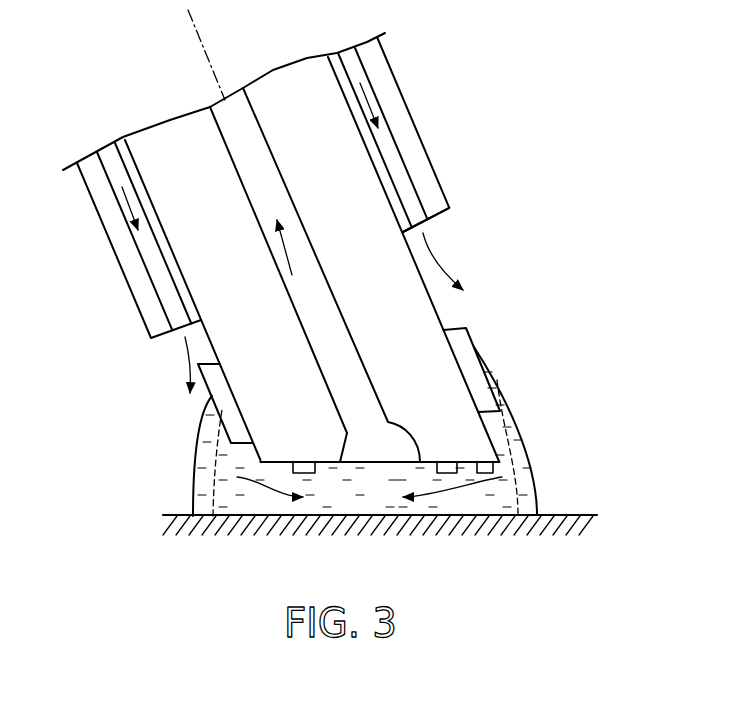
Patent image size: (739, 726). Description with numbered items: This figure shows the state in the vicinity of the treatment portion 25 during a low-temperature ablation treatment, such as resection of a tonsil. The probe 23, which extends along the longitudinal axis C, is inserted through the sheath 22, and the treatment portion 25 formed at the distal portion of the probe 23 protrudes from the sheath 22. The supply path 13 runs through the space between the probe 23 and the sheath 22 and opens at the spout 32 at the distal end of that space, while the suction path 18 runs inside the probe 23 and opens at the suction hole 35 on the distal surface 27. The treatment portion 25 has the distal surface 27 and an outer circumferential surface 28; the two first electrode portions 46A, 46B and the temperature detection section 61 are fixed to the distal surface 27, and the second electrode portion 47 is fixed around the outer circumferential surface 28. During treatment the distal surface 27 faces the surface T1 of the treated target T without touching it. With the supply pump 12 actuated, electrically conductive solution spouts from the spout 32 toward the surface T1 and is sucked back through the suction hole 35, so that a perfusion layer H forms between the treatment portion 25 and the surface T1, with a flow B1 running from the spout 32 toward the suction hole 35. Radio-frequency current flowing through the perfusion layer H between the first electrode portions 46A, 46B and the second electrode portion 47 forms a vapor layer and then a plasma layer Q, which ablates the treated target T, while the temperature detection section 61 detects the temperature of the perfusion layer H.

The longitudinal axis C is at (203, 53).
The probe 23 is at (290, 103).
The sheath 22 is at (422, 122).
The supply path 13 is at (397, 167).
The spout 32 is at (423, 232).
The outer circumferential surface 28 is at (405, 277).
The treatment portion 25 is at (410, 325).
The suction path 18 is at (318, 295).
The second electrode portion 47 is at (465, 343).
The supply pump 12 is at (139, 240).
The perfusion layer H is at (205, 440).
The plasma layer Q is at (523, 460).
The first electrode portion 46A is at (443, 462).
The first electrode portion 46B is at (307, 462).
The temperature detection section 61 is at (483, 462).
The distal surface 27 is at (283, 463).
The suction hole 35 is at (377, 463).
The flow B1 is at (369, 498).
The treated target T is at (178, 515).
The surface of the treated target T1 is at (490, 515).